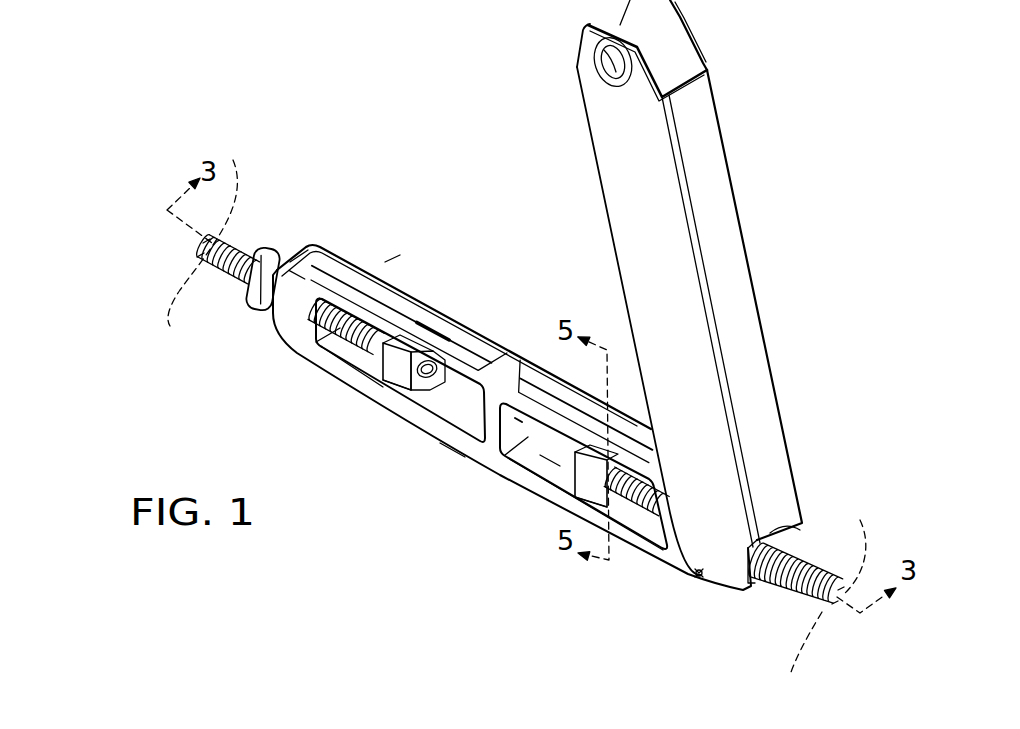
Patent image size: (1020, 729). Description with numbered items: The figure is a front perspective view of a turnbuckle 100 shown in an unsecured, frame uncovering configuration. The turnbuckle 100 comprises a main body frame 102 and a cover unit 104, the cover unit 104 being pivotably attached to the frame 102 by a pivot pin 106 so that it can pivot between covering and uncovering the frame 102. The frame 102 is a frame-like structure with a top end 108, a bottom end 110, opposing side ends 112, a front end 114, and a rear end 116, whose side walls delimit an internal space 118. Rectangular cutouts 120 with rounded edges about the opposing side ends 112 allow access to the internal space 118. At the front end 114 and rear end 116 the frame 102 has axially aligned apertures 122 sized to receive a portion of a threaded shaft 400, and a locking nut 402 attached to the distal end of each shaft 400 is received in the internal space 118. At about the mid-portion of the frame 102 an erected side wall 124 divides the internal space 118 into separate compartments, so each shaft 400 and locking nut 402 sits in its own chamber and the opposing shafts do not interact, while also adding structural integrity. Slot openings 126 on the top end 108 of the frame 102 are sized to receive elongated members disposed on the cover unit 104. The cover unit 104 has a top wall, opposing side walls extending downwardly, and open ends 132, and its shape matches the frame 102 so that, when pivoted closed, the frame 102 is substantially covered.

The turnbuckle 100 is at (800, 90).
The main body frame 102 is at (418, 488).
The cover unit 104 is at (790, 312).
The pivot pin 106 is at (701, 578).
The top end 108 is at (360, 258).
The bottom end 110 is at (452, 452).
The opposing side ends 112 is at (352, 385).
The front end 114 is at (265, 305).
The rear end 116 is at (780, 544).
The internal space 118 is at (548, 478).
The cutouts 120 is at (398, 398).
The aperture 122 is at (243, 280).
The side wall 124 is at (518, 420).
The slot openings 126 is at (562, 163).
The open ends 132 is at (672, 22).
The threaded shaft 400 is at (243, 250).
The locking nut 402 is at (393, 360).